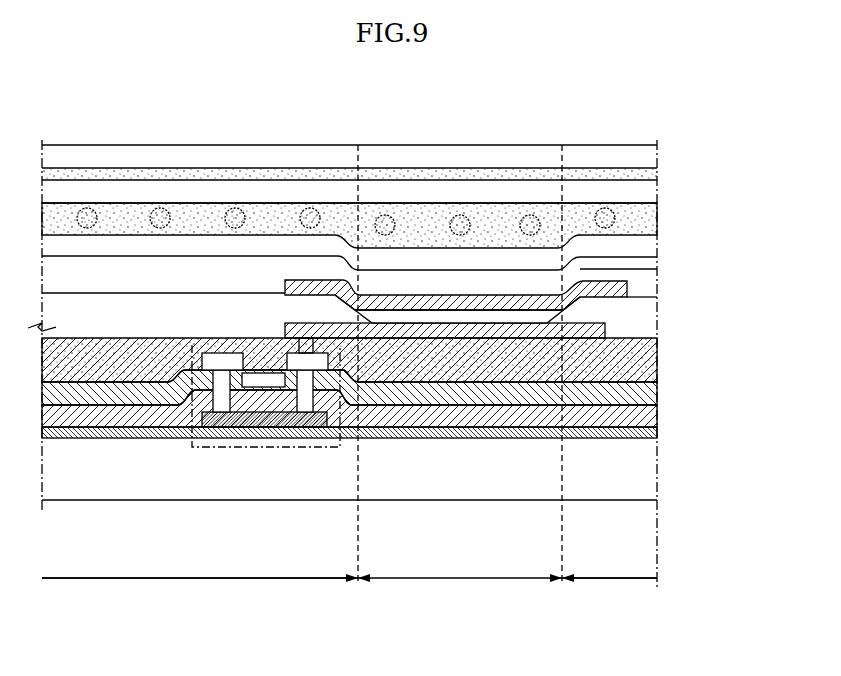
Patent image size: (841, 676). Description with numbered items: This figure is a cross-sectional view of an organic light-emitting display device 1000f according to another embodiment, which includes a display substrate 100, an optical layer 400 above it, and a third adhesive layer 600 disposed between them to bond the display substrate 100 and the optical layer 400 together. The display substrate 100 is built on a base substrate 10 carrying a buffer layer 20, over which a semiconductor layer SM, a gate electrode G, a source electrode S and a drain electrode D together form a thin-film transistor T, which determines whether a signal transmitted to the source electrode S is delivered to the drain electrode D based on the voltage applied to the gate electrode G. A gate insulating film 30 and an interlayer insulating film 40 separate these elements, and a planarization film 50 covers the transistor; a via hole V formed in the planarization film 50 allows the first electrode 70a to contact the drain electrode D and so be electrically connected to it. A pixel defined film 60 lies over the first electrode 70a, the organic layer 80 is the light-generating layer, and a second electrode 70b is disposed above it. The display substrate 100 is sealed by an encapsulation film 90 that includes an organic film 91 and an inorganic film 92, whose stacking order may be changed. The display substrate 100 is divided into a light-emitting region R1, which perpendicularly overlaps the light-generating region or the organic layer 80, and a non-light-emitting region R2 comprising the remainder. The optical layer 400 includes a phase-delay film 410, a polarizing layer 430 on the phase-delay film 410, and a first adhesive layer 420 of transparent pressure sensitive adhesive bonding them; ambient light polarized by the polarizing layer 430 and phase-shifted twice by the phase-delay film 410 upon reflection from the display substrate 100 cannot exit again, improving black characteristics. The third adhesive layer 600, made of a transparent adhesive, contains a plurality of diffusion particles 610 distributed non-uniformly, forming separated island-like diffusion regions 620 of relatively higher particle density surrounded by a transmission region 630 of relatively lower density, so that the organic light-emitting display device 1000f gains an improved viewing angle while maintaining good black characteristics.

The organic light-emitting display device 1000f is at (580, 97).
The base substrate 10 is at (655, 470).
The buffer layer 20 is at (655, 432).
The gate insulating film 30 is at (655, 412).
The interlayer insulating film 40 is at (655, 393).
The planarization film 50 is at (655, 372).
The pixel defined film 60 is at (612, 327).
The first electrode 70a is at (655, 341).
The second electrode 70b is at (628, 287).
The organic layer 80 is at (548, 315).
The encapsulation film 90 is at (392, 268).
The organic film 91 is at (655, 269).
The inorganic film 92 is at (655, 257).
The display substrate 100 is at (417, 408).
The optical layer 400 is at (407, 171).
The phase-delay film 410 is at (655, 190).
The first adhesive layer 420 is at (655, 174).
The polarizing layer 430 is at (655, 150).
The third adhesive layer 600 is at (399, 178).
The diffusion particles 610 is at (600, 238).
The diffusion regions 620 is at (612, 206).
The transmission region 630 is at (583, 210).
The source electrode S is at (208, 360).
The semiconductor layer SM is at (240, 420).
The gate electrode G is at (262, 382).
The thin-film transistor T is at (254, 441).
The drain electrode D is at (300, 362).
The via hole V is at (306, 340).
The light-emitting region R1 is at (349, 593).
The non-light-emitting region R2 is at (349, 595).